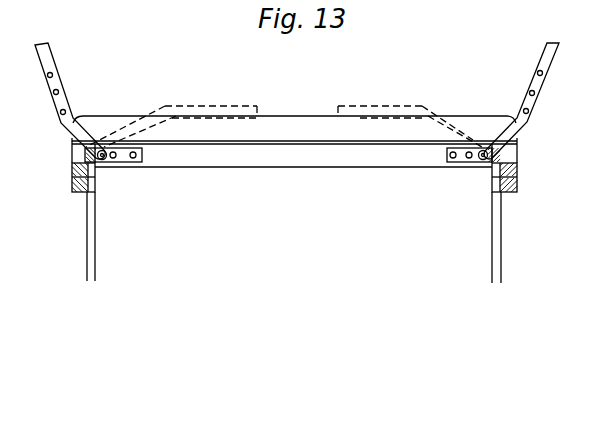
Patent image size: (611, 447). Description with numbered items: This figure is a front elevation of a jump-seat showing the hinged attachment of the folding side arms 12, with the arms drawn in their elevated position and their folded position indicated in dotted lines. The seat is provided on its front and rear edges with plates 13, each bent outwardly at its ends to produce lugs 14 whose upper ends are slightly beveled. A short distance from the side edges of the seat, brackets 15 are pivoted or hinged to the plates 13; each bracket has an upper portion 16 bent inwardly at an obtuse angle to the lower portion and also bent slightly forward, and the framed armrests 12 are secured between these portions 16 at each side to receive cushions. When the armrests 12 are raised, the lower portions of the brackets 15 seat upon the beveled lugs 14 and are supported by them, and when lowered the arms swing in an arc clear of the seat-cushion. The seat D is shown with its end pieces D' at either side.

The side arm 12 is at (68, 59).
The plate 13 is at (126, 162).
The lug 14 is at (74, 152).
The bracket 15 is at (60, 89).
The upper portion 16 is at (294, 126).
The rear seat D is at (294, 154).
The end piece D' is at (297, 210).